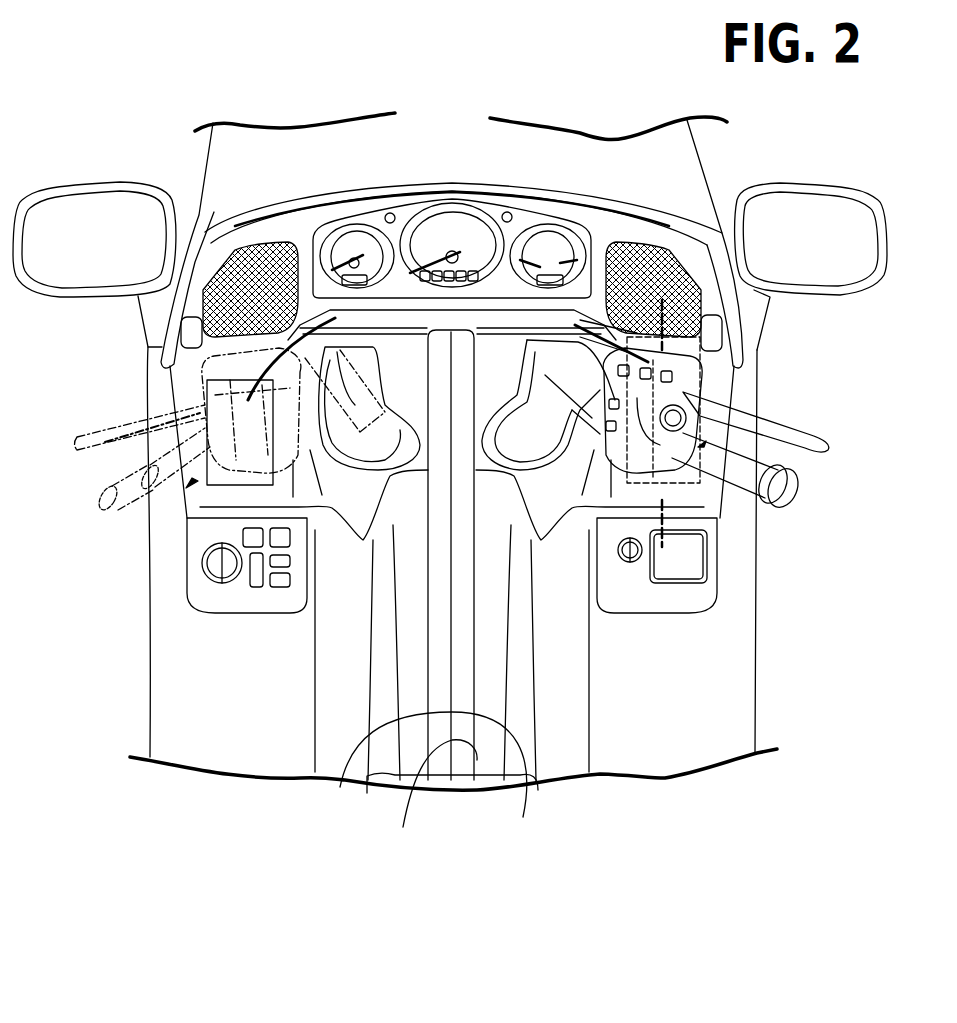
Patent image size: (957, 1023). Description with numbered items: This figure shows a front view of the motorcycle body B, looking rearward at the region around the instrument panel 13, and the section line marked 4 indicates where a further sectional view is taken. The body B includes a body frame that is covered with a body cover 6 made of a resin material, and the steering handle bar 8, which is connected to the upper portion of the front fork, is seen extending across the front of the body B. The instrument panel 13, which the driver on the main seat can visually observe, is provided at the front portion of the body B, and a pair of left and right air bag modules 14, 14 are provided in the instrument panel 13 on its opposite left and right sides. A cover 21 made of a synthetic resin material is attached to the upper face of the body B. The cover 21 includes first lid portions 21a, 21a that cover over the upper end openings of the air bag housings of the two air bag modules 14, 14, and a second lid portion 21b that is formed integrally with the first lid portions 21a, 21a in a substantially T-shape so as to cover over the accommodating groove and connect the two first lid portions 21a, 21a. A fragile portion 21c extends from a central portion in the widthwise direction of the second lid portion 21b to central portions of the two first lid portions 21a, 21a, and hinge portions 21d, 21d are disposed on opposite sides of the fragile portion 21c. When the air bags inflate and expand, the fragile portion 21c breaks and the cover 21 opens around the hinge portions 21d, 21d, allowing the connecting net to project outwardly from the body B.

The body cover 6 is at (158, 608).
The steering handle bar 8 is at (560, 383).
The instrument panel 13 is at (718, 390).
The air bag module 14 is at (750, 412).
The cover 21 is at (418, 652).
The first lid portion 21a is at (221, 480).
The second lid portion 21b is at (470, 620).
The fragile portion 21c is at (431, 804).
The hinge portion 21d is at (425, 783).
The section line IV-IV 4 is at (663, 537).
The body B is at (138, 702).